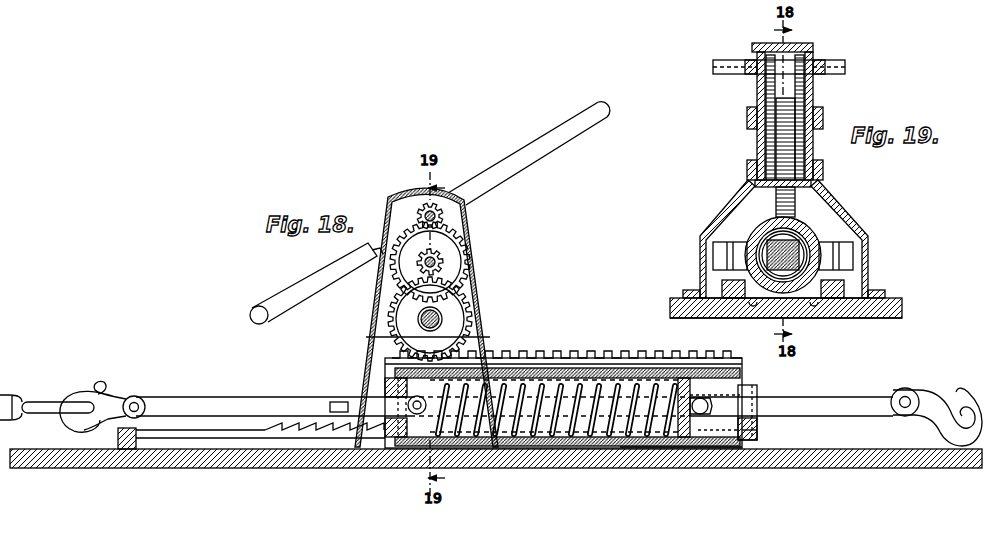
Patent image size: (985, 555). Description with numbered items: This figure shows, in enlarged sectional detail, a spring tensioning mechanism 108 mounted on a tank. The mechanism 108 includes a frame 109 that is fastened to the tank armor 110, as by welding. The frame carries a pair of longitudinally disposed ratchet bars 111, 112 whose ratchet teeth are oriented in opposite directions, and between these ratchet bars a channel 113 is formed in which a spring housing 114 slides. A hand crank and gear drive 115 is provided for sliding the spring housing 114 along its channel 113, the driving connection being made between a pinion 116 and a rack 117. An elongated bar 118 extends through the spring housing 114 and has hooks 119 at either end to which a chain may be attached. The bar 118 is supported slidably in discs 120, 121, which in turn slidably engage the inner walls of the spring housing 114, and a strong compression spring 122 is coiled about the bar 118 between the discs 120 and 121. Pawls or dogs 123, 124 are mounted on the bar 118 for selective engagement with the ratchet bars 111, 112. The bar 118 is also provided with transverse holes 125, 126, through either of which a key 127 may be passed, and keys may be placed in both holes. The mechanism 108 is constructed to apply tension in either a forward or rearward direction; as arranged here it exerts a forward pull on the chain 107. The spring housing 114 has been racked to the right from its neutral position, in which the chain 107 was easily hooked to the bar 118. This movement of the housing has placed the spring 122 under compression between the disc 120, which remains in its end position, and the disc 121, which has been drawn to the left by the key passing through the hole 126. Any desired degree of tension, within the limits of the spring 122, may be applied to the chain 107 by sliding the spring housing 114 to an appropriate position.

In FIG. 18, the chain 107 is at (20, 395).
In FIG. 18, the tensioning mechanism 108 is at (560, 356).
In FIG. 19, the tensioning mechanism 108 is at (858, 226).
In FIG. 18, the frame 109 is at (758, 434).
In FIG. 19, the frame 109 is at (846, 287).
In FIG. 18, the tank armor 110 is at (670, 450).
In FIG. 19, the tank armor 110 is at (880, 316).
In FIG. 19, the ratchet bar 111 is at (722, 286).
In FIG. 18, the ratchet bar 112 is at (216, 455).
In FIG. 19, the ratchet bar 112 is at (832, 304).
In FIG. 19, the channel 113 is at (768, 302).
In FIG. 18, the spring housing 114 is at (735, 386).
In FIG. 19, the spring housing 114 is at (802, 237).
In FIG. 18, the hand crank and gear drive 115 is at (483, 270).
In FIG. 19, the hand crank and gear drive 115 is at (756, 143).
In FIG. 18, the pinion 116 is at (468, 322).
In FIG. 18, the rack 117 is at (610, 356).
In FIG. 18, the elongated bar 118 is at (240, 398).
In FIG. 19, the elongated bar 118 is at (760, 246).
In FIG. 18, the hook 119 is at (84, 390).
In FIG. 18, the disc 120 is at (410, 443).
In FIG. 18, the disc 121 is at (692, 438).
In FIG. 18, the compression spring 122 is at (604, 440).
In FIG. 19, the compression spring 122 is at (776, 232).
In FIG. 18, the pawl or dog 123 is at (372, 436).
In FIG. 18, the pawl or dog 124 is at (710, 406).
In FIG. 18, the transverse hole 125 is at (338, 401).
In FIG. 18, the transverse hole 126 is at (698, 398).
In FIG. 18, the key 127 is at (716, 398).